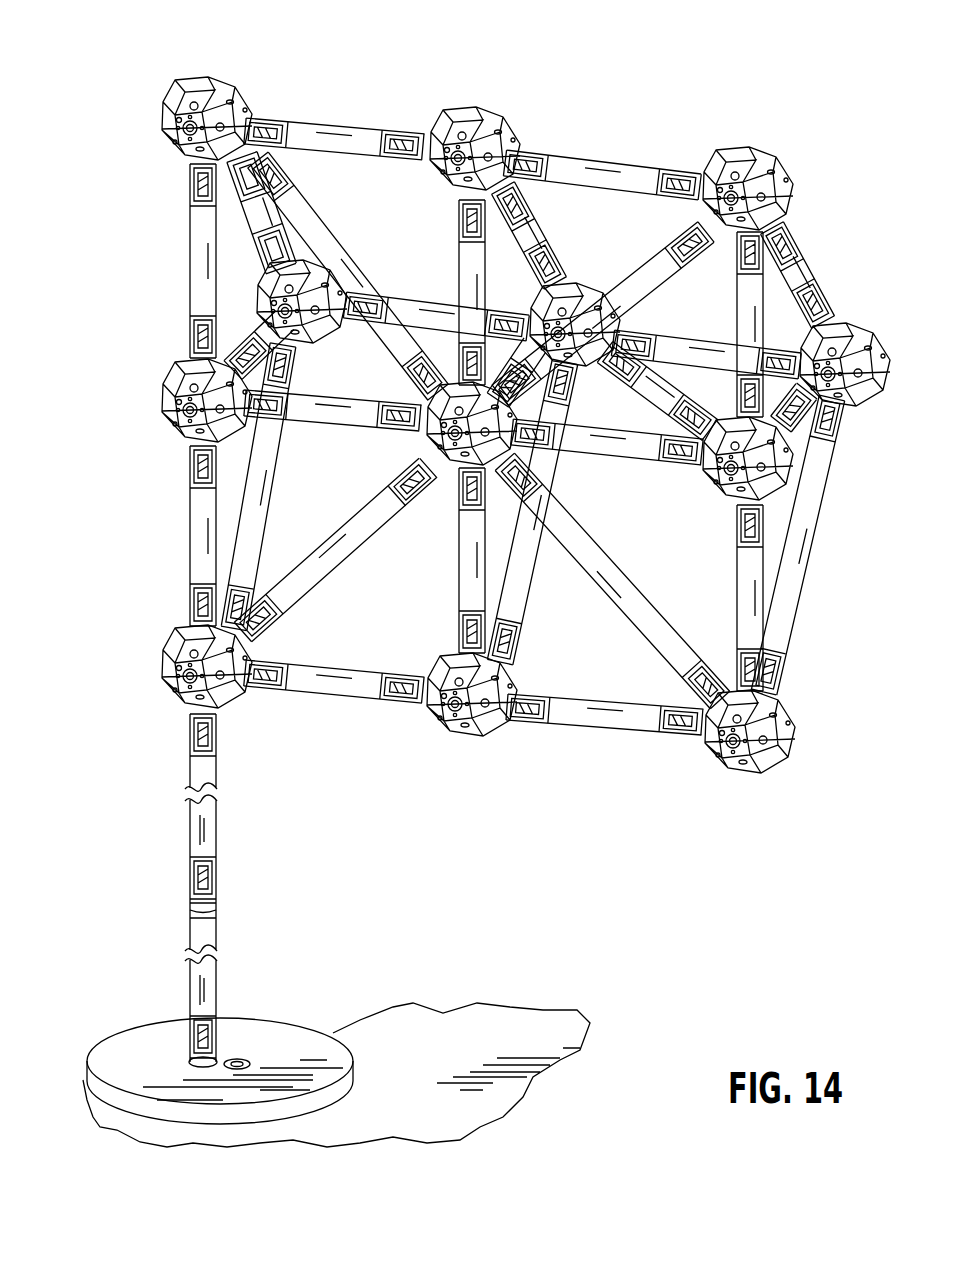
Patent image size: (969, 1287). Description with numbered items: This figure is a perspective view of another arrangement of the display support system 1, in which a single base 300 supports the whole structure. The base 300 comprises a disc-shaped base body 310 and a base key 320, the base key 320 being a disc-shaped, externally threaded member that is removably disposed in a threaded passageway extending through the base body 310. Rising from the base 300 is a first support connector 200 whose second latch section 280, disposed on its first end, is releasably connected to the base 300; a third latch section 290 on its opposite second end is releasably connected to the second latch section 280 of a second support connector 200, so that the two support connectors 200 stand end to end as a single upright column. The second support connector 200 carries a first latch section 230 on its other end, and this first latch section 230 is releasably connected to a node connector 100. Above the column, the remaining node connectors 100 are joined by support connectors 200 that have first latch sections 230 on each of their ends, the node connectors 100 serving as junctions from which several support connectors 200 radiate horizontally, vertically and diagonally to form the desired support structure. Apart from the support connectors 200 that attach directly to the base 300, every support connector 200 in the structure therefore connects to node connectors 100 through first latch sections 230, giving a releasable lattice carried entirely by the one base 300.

The display support system 1 is at (613, 108).
The node connector 100 is at (582, 282).
The support connector 200 is at (316, 116).
The first latch section 230 is at (268, 143).
The second latch section 280 is at (222, 877).
The third latch section 290 is at (232, 931).
The base 300 is at (358, 1050).
The base body 310 is at (325, 1095).
The base key 320 is at (228, 1055).